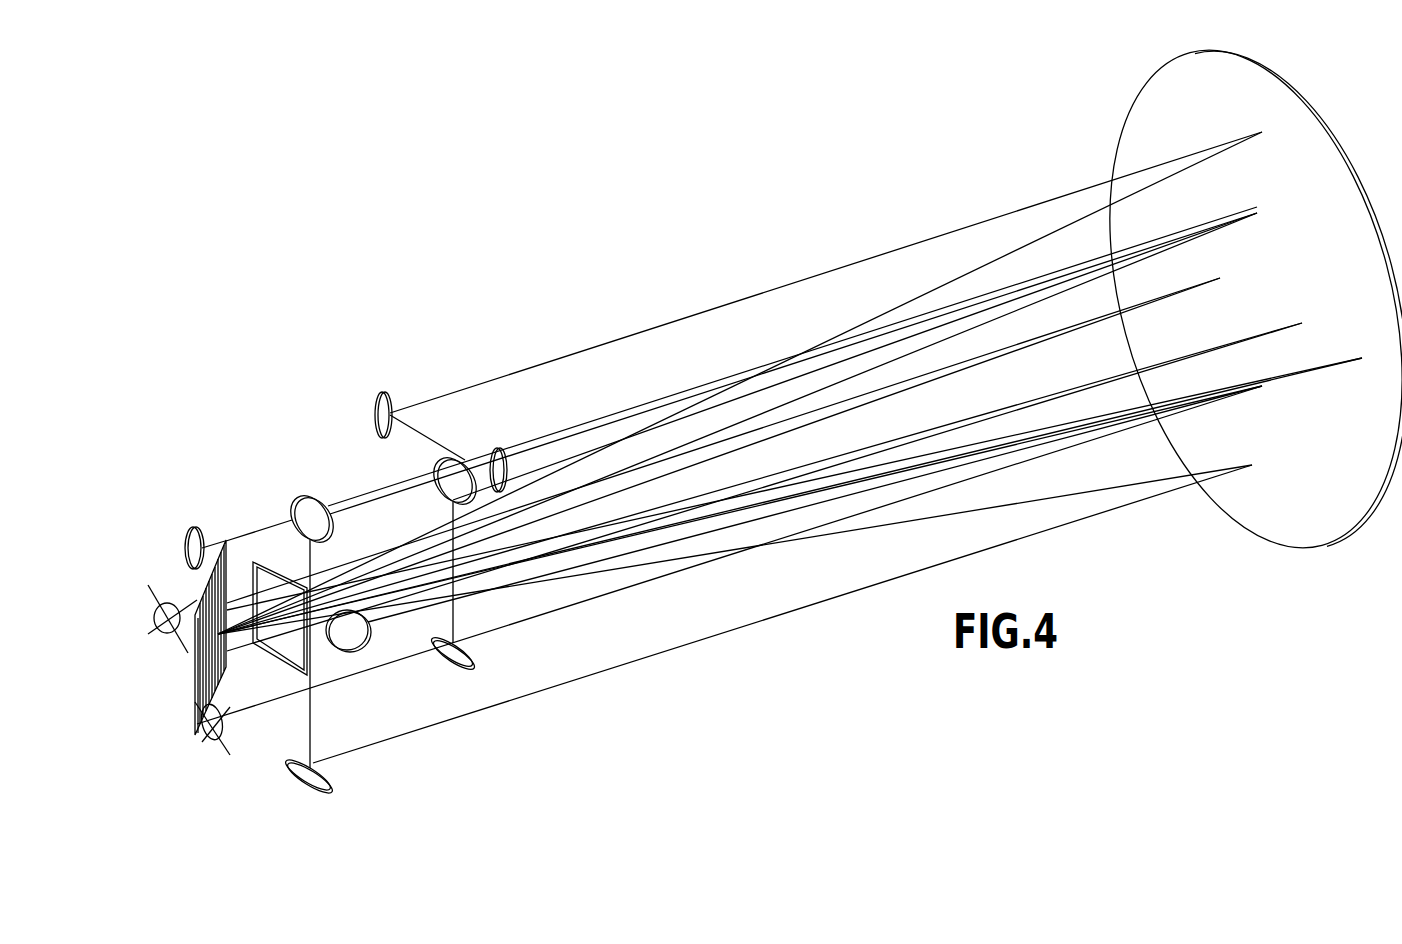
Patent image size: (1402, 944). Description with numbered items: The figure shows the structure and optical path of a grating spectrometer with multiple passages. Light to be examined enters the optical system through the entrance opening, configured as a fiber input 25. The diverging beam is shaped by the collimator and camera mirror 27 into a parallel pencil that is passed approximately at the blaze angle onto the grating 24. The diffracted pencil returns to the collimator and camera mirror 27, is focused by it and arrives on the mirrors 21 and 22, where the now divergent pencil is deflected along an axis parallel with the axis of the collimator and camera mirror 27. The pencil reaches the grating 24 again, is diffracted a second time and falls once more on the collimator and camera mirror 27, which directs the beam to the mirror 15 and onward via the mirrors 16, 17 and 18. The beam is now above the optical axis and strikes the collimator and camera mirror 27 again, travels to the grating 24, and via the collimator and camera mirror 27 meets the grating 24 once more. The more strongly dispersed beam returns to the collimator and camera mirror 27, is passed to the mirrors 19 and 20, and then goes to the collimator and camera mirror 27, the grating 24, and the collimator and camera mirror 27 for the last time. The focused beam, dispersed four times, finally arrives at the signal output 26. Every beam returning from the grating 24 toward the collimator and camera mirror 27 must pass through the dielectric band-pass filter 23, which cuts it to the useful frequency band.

The mirror 15 is at (448, 670).
The mirror 16 is at (436, 470).
The mirror 17 is at (506, 470).
The mirror 18 is at (374, 414).
The mirror 19 is at (300, 784).
The mirror 20 is at (300, 502).
The mirror 21 is at (350, 652).
The mirror 22 is at (186, 549).
The dielectric band-pass filter 23 is at (275, 666).
The grating 24 is at (193, 668).
The fiber input 25 is at (154, 619).
The signal output 26 is at (208, 745).
The collimator and camera mirror 27 is at (1118, 142).